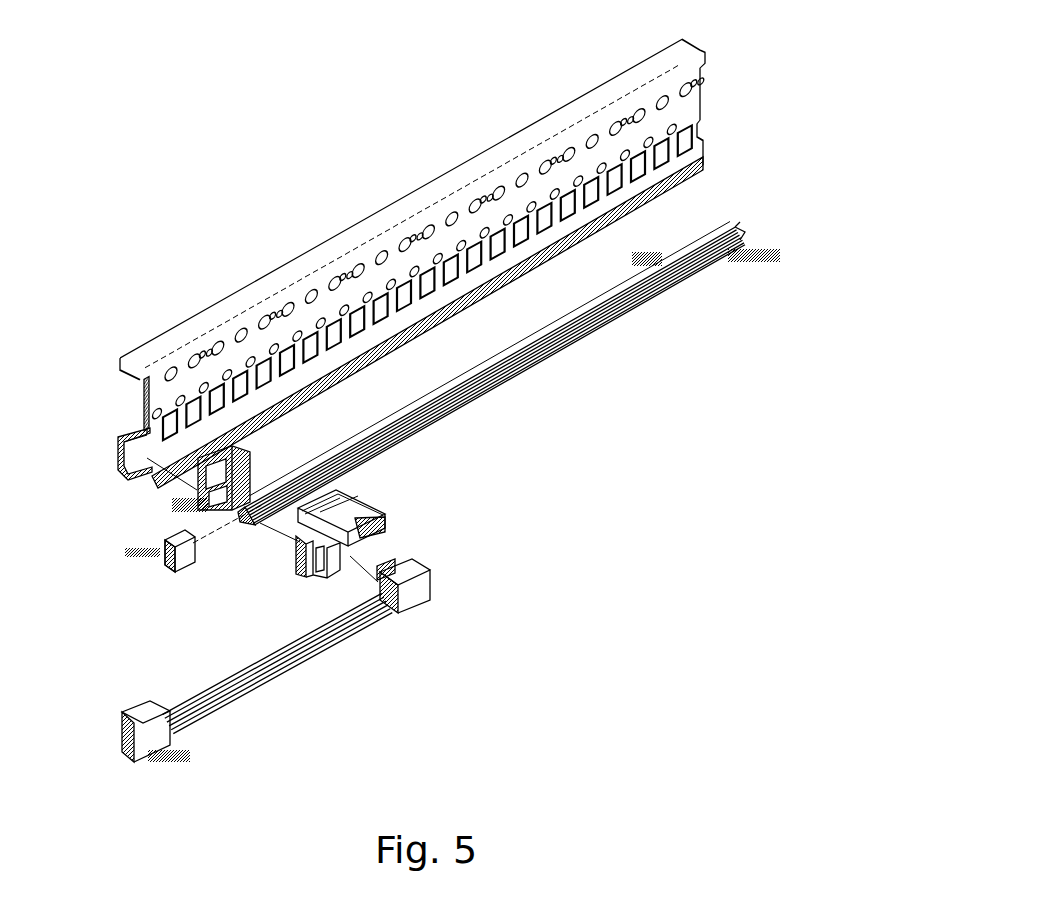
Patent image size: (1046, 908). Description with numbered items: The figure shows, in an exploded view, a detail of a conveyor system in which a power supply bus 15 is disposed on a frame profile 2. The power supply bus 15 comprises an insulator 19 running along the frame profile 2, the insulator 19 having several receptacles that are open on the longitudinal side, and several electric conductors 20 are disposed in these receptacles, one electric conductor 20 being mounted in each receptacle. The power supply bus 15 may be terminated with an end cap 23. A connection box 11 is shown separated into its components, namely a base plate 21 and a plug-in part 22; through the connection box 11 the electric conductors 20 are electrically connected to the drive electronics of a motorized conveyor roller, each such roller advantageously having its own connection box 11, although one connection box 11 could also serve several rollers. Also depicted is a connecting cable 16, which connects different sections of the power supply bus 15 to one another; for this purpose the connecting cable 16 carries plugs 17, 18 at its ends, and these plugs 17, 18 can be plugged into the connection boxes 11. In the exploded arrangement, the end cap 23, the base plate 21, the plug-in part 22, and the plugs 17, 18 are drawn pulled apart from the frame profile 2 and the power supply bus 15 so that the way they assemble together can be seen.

The frame profile 2 is at (363, 230).
The connection box 11 is at (378, 488).
The power supply bus 15 is at (530, 381).
The connecting cable 16 is at (207, 690).
The plug 17 is at (178, 739).
The plug 18 is at (407, 602).
The insulator 19 is at (629, 253).
The electric conductors 20 is at (779, 263).
The base plate 21 is at (188, 486).
The plug-in part 22 is at (380, 525).
The end cap 23 is at (176, 538).